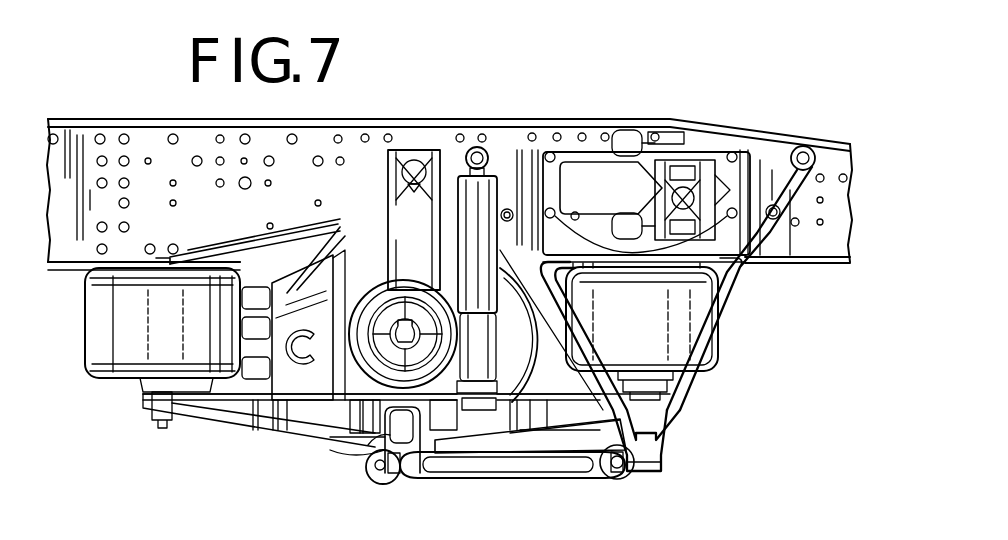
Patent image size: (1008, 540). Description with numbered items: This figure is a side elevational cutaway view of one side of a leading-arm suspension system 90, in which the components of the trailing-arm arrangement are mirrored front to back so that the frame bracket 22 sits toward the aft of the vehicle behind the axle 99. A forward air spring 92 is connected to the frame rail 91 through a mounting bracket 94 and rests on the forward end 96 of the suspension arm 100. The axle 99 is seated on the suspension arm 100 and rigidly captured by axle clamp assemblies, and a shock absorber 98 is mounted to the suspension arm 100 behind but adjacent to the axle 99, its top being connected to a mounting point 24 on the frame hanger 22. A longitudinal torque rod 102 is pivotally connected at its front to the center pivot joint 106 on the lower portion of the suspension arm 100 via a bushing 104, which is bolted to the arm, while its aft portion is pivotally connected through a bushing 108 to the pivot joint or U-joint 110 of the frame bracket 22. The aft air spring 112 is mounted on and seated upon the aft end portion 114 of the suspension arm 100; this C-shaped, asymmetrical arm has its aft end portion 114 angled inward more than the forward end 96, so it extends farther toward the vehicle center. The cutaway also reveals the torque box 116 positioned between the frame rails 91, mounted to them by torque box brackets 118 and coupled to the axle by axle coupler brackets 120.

The frame bracket 22 is at (748, 277).
The mounting point 24 is at (480, 149).
The suspension system 90 is at (566, 95).
The frame rail 91 is at (118, 120).
The forward air spring 92 is at (86, 323).
The mounting bracket 94 is at (97, 270).
The forward end 96 is at (230, 410).
The shock absorber 98 is at (467, 190).
The axle 99 is at (373, 353).
The suspension arm 100 is at (383, 433).
The longitudinal torque rod 102 is at (521, 480).
The bushing 104 is at (392, 474).
The center pivot joint 106 is at (411, 460).
The bushing 108 is at (623, 466).
The pivot joint 110 is at (658, 453).
The aft air spring 112 is at (721, 357).
The aft end portion 114 is at (560, 416).
The torque box 116 is at (613, 195).
The torque box bracket 118 is at (679, 152).
The axle coupler bracket 120 is at (430, 240).